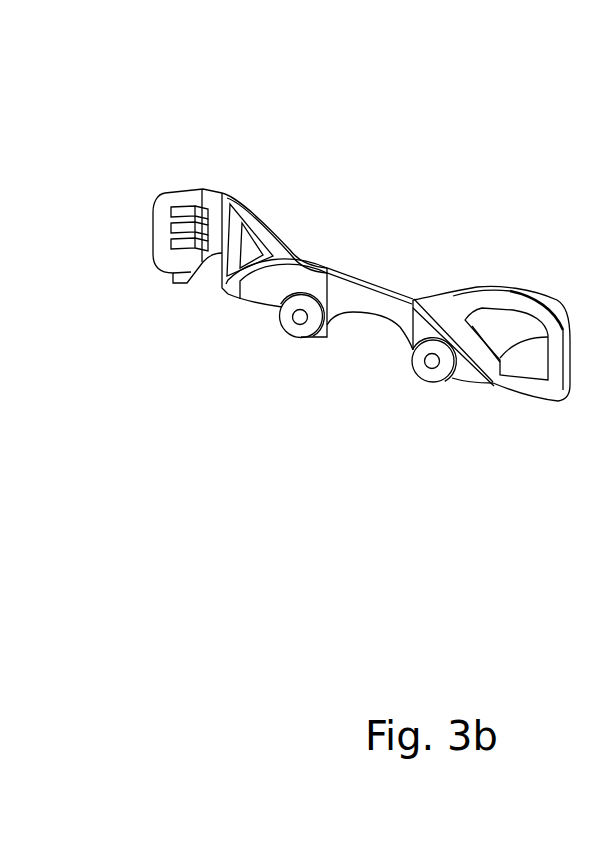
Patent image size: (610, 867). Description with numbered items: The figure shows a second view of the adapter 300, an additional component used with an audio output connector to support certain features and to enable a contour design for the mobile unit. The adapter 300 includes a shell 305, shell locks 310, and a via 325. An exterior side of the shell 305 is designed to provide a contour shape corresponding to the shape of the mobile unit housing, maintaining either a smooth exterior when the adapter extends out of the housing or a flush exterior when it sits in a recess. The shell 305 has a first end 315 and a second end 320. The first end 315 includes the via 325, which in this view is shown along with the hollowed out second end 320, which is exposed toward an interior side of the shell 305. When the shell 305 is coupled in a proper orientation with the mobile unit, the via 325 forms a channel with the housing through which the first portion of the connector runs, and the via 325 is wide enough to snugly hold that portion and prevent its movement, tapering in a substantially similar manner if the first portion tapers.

The adapter 300 is at (310, 263).
The shell 305 is at (373, 285).
The shell locks 310 is at (304, 318).
The first end 315 is at (153, 208).
The second end 320 is at (550, 302).
The via 325 is at (208, 267).